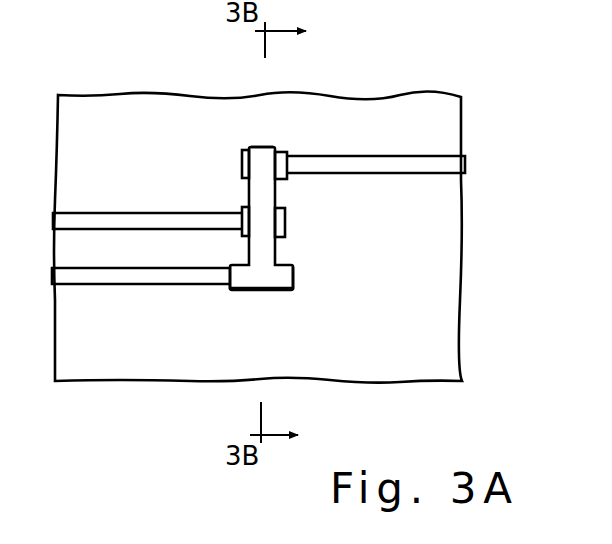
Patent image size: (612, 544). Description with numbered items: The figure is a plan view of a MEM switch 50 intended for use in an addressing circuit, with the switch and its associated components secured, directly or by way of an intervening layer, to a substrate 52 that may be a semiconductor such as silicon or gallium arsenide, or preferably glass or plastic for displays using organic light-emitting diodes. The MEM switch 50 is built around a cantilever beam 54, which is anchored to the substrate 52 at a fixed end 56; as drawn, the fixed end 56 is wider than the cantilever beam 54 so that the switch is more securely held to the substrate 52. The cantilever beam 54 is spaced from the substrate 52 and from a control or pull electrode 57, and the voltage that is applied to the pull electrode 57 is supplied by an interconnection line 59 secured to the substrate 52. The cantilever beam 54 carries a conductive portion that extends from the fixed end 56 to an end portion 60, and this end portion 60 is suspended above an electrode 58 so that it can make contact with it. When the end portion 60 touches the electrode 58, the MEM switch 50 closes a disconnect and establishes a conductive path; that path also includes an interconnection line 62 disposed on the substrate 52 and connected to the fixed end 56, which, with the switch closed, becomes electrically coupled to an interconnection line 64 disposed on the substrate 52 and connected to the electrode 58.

The MEM switch 50 is at (300, 198).
The substrate 52 is at (430, 302).
The cantilever beam 54 is at (277, 148).
The fixed end 56 is at (283, 283).
The pull electrode 57 is at (285, 223).
The electrode 58 is at (242, 163).
The interconnection line 59 is at (108, 213).
The end portion 60 is at (258, 146).
The interconnection line 62 is at (123, 285).
The interconnection line 64 is at (418, 156).